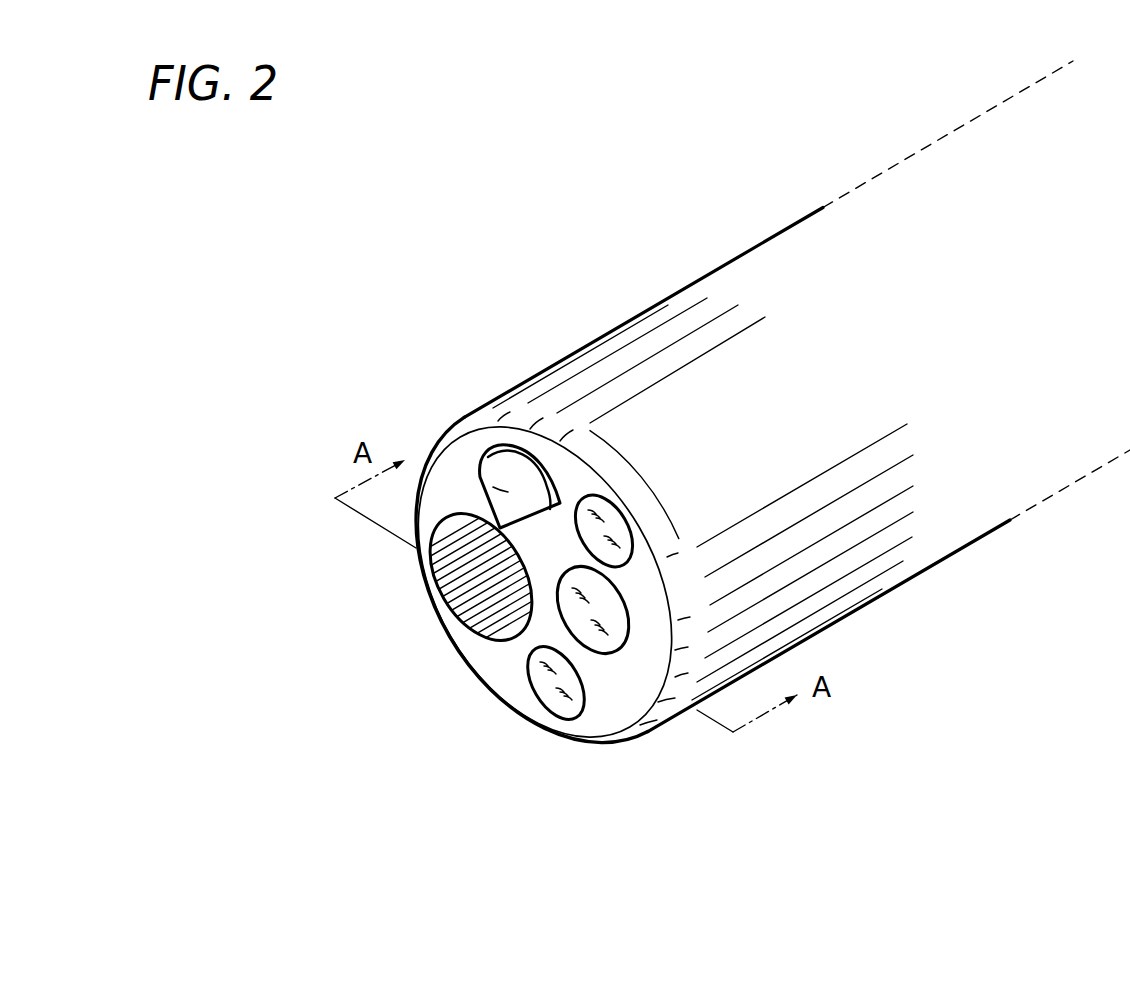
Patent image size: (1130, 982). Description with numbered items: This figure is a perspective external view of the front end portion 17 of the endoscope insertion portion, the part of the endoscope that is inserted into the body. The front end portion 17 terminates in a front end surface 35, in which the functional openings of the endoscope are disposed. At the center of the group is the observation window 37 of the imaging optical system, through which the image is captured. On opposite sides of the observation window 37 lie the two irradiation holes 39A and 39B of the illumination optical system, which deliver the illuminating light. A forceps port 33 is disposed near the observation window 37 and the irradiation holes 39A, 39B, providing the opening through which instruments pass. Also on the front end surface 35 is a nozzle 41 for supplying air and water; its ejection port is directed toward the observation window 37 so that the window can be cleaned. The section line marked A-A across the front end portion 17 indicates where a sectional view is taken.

The front end portion 17 is at (800, 762).
The forceps port 33 is at (453, 596).
The front end surface 35 is at (482, 663).
The observation window 37 is at (602, 646).
The irradiation hole 39A is at (538, 688).
The irradiation hole 39B is at (599, 533).
The nozzle 41 is at (480, 472).